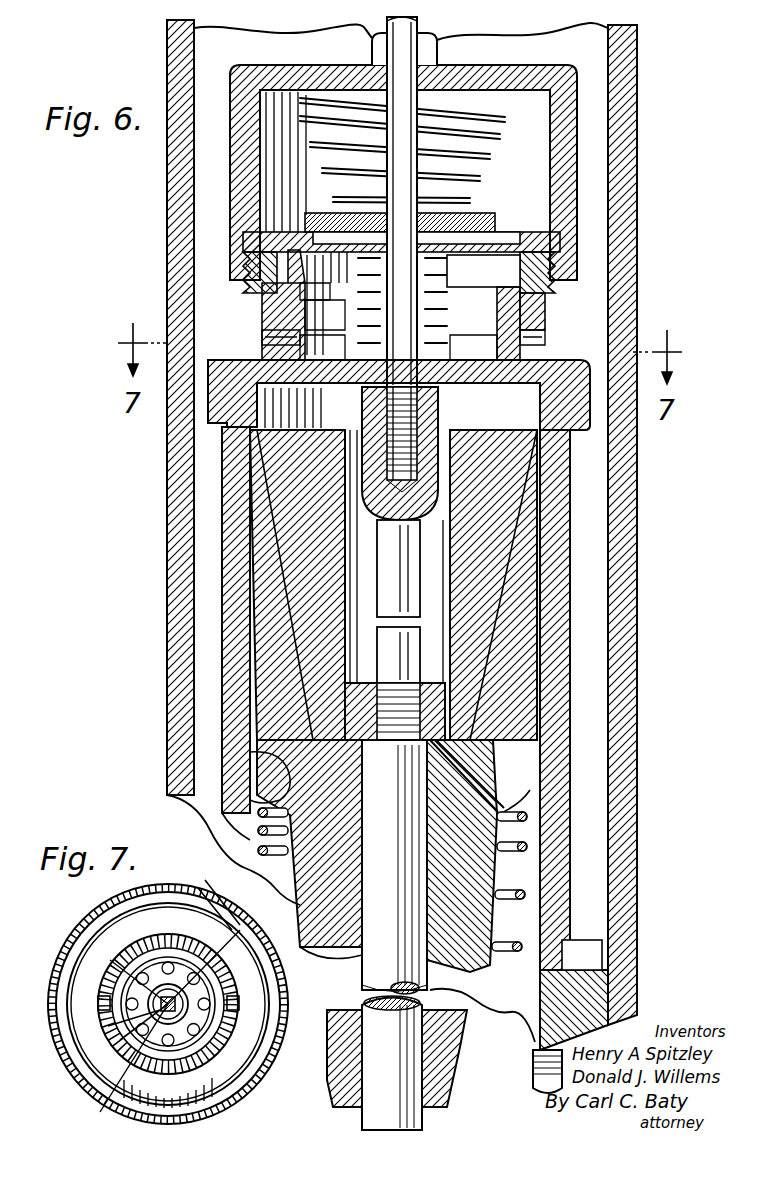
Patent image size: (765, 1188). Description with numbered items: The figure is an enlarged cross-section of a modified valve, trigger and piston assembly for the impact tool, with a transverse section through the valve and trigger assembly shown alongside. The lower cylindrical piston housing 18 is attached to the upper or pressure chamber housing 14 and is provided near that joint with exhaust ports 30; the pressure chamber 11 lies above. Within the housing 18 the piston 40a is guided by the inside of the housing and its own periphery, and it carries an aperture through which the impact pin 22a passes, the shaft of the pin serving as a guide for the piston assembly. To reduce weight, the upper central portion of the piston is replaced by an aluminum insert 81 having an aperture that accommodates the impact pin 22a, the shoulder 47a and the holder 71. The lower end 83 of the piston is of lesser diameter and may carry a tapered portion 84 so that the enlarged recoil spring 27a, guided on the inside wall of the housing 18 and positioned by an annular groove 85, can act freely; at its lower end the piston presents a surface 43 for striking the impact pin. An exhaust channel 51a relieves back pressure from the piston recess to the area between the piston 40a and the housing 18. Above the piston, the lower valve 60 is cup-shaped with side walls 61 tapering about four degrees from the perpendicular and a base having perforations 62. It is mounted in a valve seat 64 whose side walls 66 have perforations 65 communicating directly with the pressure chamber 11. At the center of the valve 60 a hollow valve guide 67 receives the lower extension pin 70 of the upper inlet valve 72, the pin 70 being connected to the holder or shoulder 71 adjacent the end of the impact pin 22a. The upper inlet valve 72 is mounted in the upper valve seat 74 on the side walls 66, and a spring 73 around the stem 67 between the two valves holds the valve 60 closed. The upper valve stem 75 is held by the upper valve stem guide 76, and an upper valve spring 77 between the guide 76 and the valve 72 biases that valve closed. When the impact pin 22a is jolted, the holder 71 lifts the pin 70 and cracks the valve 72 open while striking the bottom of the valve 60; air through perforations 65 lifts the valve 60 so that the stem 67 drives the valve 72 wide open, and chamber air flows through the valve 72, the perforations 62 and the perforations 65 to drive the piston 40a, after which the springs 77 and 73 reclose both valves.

In FIG. 6, the pressure chamber 11 is at (330, 55).
In FIG. 7, the pressure chamber 11 is at (258, 1068).
In FIG. 6, the upper or pressure chamber housing 14 is at (167, 557).
In FIG. 6, the lower cylindrical piston housing 18 is at (222, 586).
In FIG. 7, the lower cylindrical piston housing 18 is at (225, 1116).
In FIG. 6, the impact pin 22a is at (420, 988).
In FIG. 6, the recoil spring 27a is at (258, 812).
In FIG. 6, the exhaust ports 30 is at (530, 1090).
In FIG. 6, the piston 40a is at (300, 712).
In FIG. 6, the surface 43 is at (350, 1135).
In FIG. 6, the shoulder 47a is at (430, 690).
In FIG. 6, the exhaust channel 51a is at (500, 770).
In FIG. 6, the lower valve 60 is at (270, 310).
In FIG. 6, the side walls 61 is at (300, 302).
In FIG. 7, the side walls 61 is at (215, 987).
In FIG. 6, the perforations 62 is at (325, 368).
In FIG. 7, the perforations 62 is at (225, 915).
In FIG. 6, the valve seat 64 is at (208, 430).
In FIG. 7, the valve seat 64 is at (236, 1046).
In FIG. 6, the perforations 65 is at (265, 340).
In FIG. 7, the perforations 65 is at (240, 1003).
In FIG. 6, the side walls 66 is at (540, 328).
In FIG. 7, the side walls 66 is at (218, 1026).
In FIG. 6, the hollow valve guide 67 is at (322, 335).
In FIG. 7, the hollow valve guide 67 is at (120, 1040).
In FIG. 6, the lower extension pin 70 is at (440, 412).
In FIG. 7, the lower extension pin 70 is at (148, 990).
In FIG. 6, the holder or shoulder 71 is at (362, 412).
In FIG. 6, the upper inlet valve 72 is at (480, 232).
In FIG. 6, the spring 73 is at (445, 268).
In FIG. 7, the spring 73 is at (150, 1008).
In FIG. 6, the upper valve seat 74 is at (555, 285).
In FIG. 6, the upper valve stem 75 is at (420, 25).
In FIG. 6, the upper valve stem guide 76 is at (455, 68).
In FIG. 6, the upper valve spring 77 is at (490, 140).
In FIG. 6, the aluminum insert 81 is at (290, 497).
In FIG. 6, the lower end 83 is at (497, 920).
In FIG. 6, the tapered portion 84 is at (450, 1078).
In FIG. 6, the annular groove 85 is at (260, 770).